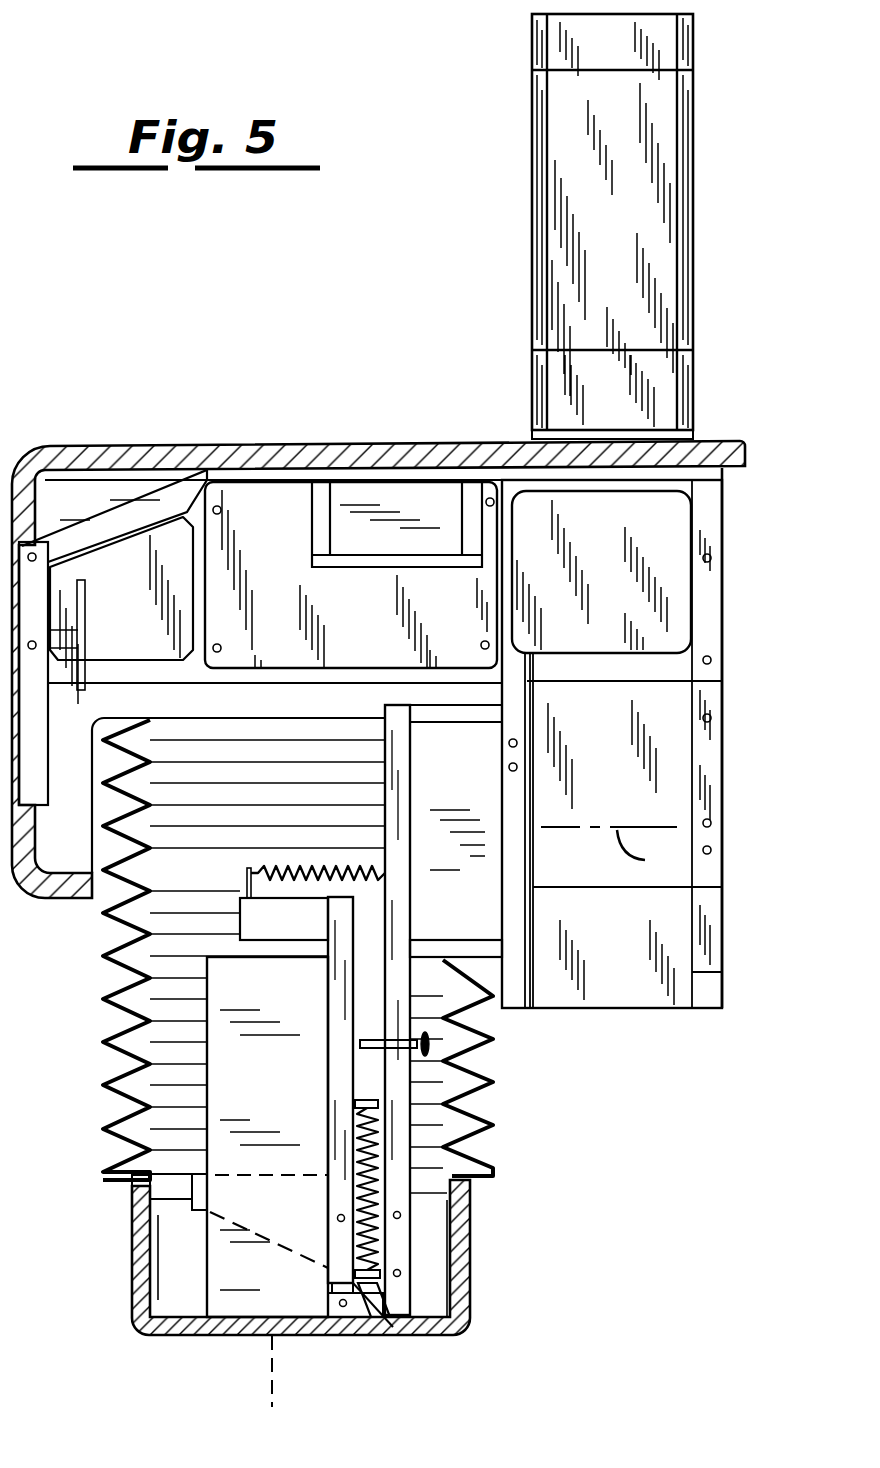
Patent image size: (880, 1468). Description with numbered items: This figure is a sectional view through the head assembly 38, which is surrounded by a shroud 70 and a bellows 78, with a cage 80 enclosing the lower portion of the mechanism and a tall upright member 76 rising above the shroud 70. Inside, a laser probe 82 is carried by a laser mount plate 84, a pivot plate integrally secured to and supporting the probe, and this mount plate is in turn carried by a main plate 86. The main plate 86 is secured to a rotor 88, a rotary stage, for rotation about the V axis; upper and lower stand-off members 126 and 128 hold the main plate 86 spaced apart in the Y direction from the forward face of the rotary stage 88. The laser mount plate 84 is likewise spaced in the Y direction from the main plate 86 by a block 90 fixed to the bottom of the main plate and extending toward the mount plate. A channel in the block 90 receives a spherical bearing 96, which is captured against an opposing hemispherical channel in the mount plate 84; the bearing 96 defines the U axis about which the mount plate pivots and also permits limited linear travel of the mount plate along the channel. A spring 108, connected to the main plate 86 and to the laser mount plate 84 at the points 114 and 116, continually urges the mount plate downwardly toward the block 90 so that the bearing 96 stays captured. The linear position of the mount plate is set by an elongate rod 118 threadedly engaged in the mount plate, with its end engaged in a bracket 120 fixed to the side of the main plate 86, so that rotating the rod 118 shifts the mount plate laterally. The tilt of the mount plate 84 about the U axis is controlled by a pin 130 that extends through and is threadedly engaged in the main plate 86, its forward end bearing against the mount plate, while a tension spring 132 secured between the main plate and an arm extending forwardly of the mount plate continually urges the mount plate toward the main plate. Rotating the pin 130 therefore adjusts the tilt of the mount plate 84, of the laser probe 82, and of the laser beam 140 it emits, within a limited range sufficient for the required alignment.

The head assembly 38 is at (322, 328).
The shroud 70 is at (155, 445).
The mounting column 76 is at (573, 137).
The bellows 78 is at (117, 968).
The cage 80 is at (135, 1315).
The laser probe 82 is at (236, 1052).
The laser mount plate 84 is at (352, 1067).
The main plate 86 is at (398, 808).
The rotor 88 is at (662, 765).
The block 90 is at (357, 1338).
The spherical bearing 96 is at (340, 1280).
The spring 108 is at (332, 1283).
The spring connection 114 is at (385, 1300).
The spring connection 116 is at (365, 1105).
The elongate rod 118 is at (338, 1303).
The bracket 120 is at (207, 1208).
The upper stand-off member 126 is at (445, 724).
The lower stand-off member 128 is at (472, 940).
The pin 130 is at (480, 1042).
The spring 132 is at (292, 870).
The laser beam 140 is at (270, 1383).